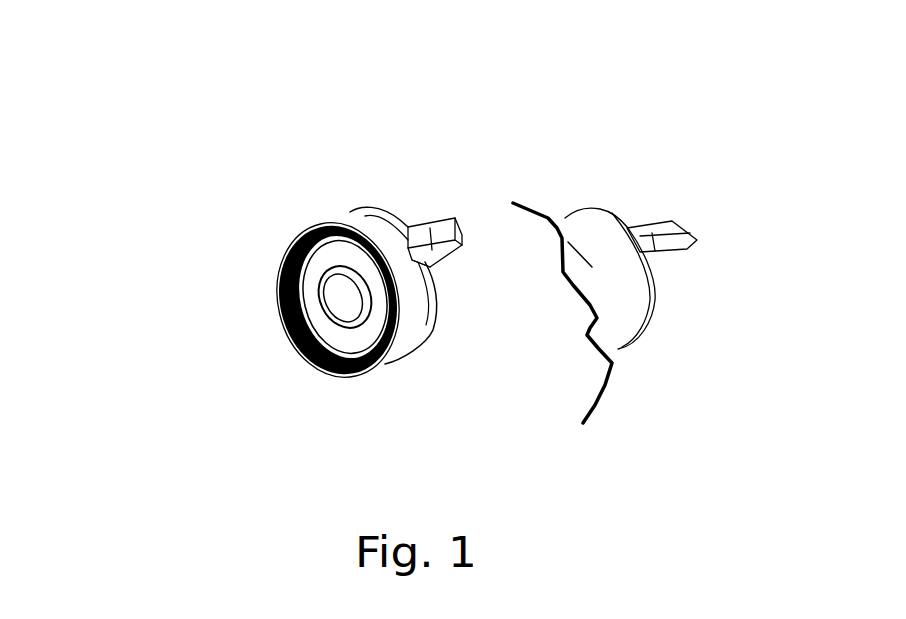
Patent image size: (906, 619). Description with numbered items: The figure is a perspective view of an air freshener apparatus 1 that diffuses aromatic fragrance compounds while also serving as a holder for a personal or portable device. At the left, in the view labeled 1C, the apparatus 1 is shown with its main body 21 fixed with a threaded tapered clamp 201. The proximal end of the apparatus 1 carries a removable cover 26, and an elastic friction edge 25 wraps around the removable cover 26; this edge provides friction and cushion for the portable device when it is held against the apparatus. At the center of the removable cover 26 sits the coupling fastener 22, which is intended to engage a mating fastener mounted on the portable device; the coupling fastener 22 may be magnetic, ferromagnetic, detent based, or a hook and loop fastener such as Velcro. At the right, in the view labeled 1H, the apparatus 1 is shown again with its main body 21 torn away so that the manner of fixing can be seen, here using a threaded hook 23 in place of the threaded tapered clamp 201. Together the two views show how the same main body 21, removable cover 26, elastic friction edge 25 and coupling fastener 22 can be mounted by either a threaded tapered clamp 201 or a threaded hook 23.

The apparatus 1 is at (276, 264).
The perspective view of the apparatus with threaded tapered clamp 1C is at (398, 375).
The perspective view of the apparatus with threaded hook 1H is at (657, 263).
The main body 21 is at (438, 217).
The coupling fastener 22 is at (342, 292).
The threaded hook 23 is at (652, 232).
The elastic friction edge 25 is at (283, 250).
The removable cover 26 is at (323, 253).
The threaded tapered clamp 201 is at (433, 228).